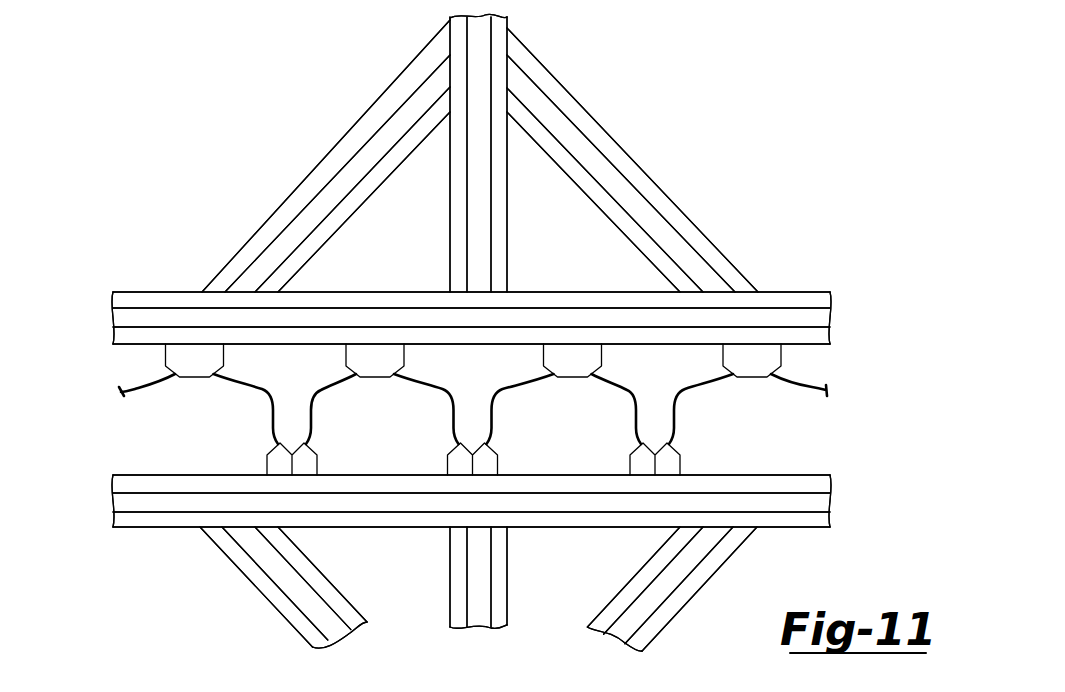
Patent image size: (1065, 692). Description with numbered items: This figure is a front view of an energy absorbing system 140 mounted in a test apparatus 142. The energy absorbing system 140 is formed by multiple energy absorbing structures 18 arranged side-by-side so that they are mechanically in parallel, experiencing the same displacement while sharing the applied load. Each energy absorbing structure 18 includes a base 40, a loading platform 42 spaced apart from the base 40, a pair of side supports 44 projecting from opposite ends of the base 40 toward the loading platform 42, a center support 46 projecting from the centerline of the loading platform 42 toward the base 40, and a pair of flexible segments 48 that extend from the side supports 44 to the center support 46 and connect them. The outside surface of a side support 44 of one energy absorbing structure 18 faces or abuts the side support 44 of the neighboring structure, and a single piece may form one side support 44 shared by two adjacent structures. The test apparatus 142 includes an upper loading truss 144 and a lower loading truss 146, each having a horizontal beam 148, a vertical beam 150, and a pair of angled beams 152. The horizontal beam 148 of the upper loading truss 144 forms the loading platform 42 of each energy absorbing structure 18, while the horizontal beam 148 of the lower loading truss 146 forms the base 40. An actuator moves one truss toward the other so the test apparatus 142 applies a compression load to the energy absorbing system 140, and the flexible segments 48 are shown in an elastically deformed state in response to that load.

The test apparatus 142 is at (176, 55).
The upper loading truss 144 is at (361, 88).
The lower loading truss 146 is at (188, 597).
The horizontal beam 148 is at (390, 291).
The vertical beam 150 is at (508, 208).
The angled beams 152 is at (320, 155).
The loading platform 42 is at (165, 291).
The base 40 is at (143, 528).
The energy absorbing structure 18 is at (118, 373).
The center support 46 is at (224, 356).
The flexible segments 48 is at (142, 392).
The side supports 44 is at (267, 465).
The energy absorbing system 140 is at (860, 372).